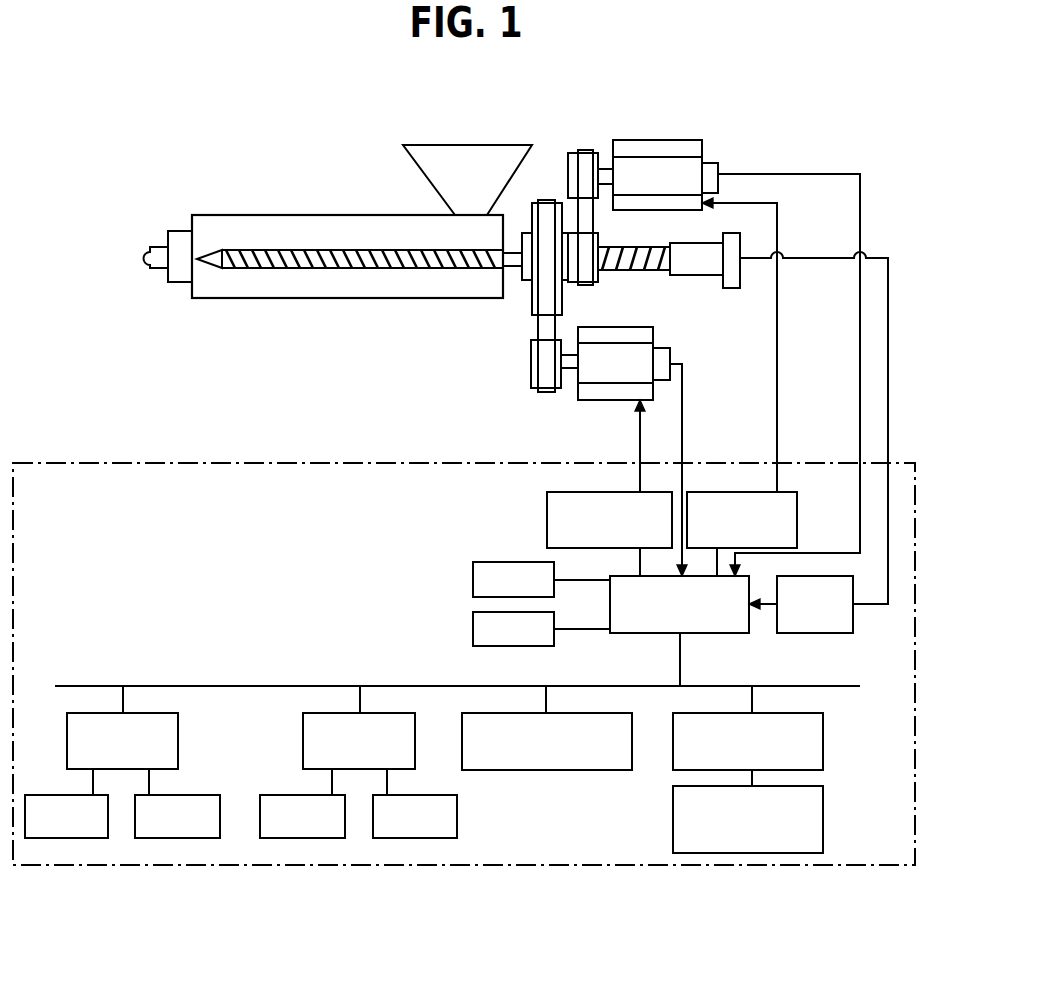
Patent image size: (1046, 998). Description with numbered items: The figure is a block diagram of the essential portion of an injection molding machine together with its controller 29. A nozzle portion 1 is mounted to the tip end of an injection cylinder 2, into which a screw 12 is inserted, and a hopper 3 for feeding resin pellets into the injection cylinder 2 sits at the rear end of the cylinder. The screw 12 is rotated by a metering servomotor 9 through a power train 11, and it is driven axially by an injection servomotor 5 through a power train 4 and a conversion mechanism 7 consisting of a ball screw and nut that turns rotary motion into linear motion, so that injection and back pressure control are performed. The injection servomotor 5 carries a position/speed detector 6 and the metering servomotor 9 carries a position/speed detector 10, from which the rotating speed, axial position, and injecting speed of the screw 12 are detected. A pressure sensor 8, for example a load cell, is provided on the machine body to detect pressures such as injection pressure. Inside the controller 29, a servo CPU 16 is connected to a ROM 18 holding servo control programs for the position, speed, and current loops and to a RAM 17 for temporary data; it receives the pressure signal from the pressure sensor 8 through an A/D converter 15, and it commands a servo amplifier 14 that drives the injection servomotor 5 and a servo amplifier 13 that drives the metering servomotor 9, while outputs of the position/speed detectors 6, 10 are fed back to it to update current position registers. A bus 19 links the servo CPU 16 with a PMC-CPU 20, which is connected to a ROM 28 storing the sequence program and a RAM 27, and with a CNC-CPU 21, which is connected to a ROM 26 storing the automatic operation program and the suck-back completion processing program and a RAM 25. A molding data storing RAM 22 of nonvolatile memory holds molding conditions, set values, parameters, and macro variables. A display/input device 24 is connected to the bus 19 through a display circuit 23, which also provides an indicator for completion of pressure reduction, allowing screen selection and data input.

The nozzle portion 1 is at (165, 247).
The injection cylinder 2 is at (265, 218).
The hopper 3 is at (457, 153).
The power train 4 is at (553, 169).
The injection servomotor 5 is at (636, 143).
The position/speed detector 6 is at (718, 165).
The conversion mechanism 7 is at (612, 238).
The pressure sensor 8 is at (742, 279).
The metering servomotor 9 is at (641, 333).
The position/speed detector 10 is at (670, 353).
The power train 11 is at (528, 332).
The screw 12 is at (329, 263).
The servo amplifier 13 is at (547, 515).
The servo amplifier 14 is at (797, 519).
The A/D converter 15 is at (785, 634).
The servo CPU 16 is at (660, 634).
The RAM 17 is at (473, 628).
The ROM 18 is at (473, 578).
The bus 19 is at (206, 685).
The PMC-CPU 20 is at (95, 710).
The CNC-CPU 21 is at (317, 712).
The molding data storing RAM 22 is at (500, 713).
The display circuit 23 is at (823, 740).
The display/input device 24 is at (823, 820).
The RAM 25 is at (387, 838).
The ROM 26 is at (273, 838).
The RAM 27 is at (145, 838).
The ROM 28 is at (43, 838).
The controller 29 is at (578, 868).